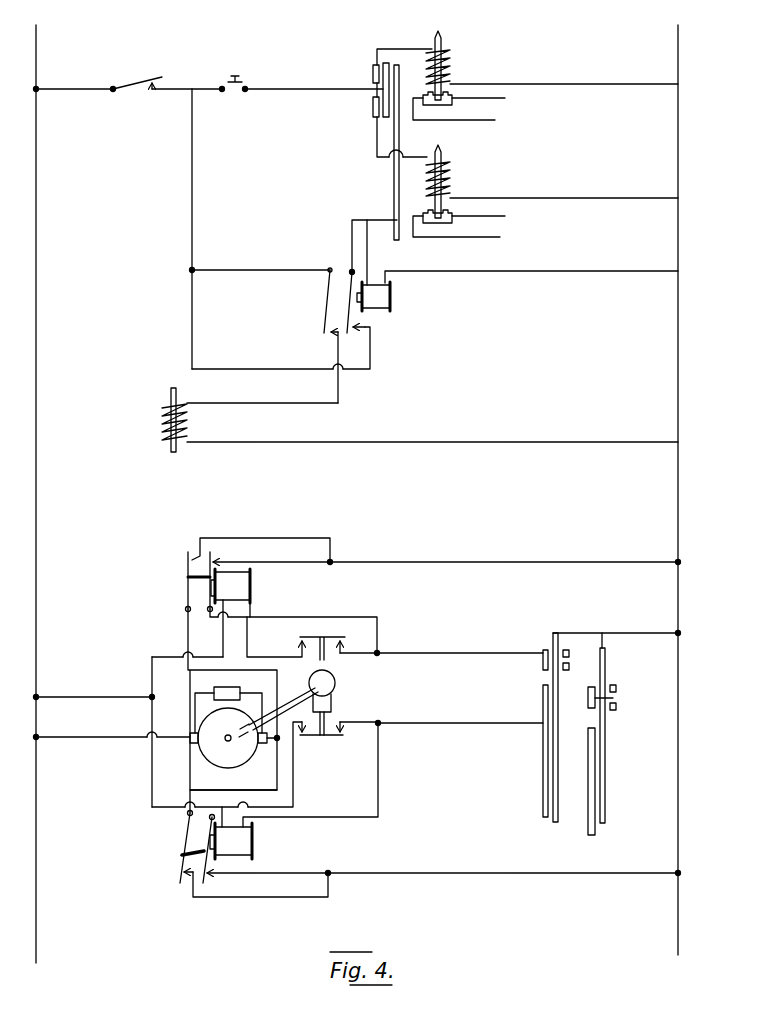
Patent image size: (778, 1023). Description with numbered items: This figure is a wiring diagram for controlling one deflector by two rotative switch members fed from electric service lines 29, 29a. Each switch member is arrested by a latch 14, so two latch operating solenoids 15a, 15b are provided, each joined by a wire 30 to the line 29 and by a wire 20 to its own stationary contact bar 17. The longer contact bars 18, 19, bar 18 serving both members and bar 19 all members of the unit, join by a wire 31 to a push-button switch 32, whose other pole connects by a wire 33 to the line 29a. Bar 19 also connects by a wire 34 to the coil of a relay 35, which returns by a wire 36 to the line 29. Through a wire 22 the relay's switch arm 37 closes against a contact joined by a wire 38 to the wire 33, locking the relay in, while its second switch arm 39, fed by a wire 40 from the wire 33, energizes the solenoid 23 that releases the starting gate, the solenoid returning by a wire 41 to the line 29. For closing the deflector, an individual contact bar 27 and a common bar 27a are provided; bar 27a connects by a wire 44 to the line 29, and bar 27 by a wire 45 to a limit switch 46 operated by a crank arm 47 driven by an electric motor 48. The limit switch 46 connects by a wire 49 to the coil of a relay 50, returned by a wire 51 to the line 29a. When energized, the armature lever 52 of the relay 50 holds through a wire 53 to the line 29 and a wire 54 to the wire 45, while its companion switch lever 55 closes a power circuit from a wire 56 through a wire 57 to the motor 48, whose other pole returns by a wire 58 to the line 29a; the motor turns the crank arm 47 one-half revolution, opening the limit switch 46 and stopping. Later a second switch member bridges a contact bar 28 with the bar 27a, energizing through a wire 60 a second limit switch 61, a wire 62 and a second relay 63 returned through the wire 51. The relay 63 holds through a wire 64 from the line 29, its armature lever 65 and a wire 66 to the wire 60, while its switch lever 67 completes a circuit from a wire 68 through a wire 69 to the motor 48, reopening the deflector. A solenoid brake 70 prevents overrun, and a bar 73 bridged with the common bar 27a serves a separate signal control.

The latch 14 is at (445, 37).
The latch operating solenoid 15a is at (456, 70).
The latch operating solenoid 15b is at (452, 181).
The stationary contact bar 17 is at (372, 70).
The stationary contact bar 18 is at (386, 62).
The stationary contact bar 19 is at (378, 168).
The wire 20 is at (377, 48).
The wire 22 is at (350, 232).
The solenoid 23 is at (160, 430).
The stationary contact bar 27 is at (544, 650).
The common contact bar 27a is at (561, 634).
The stationary contact bar 28 is at (545, 756).
The electric service line 29 is at (681, 520).
The electric service line 29a is at (40, 534).
The wire 30 is at (548, 84).
The wire 31 is at (279, 92).
The push-button switch 32 is at (236, 72).
The wire 33 is at (167, 84).
The wire 34 is at (369, 264).
The relay 35 is at (391, 298).
The wire 36 is at (546, 271).
The switch arm 37 is at (353, 317).
The wire 38 is at (371, 356).
The second switch arm 39 is at (322, 306).
The wire 40 is at (223, 270).
The wire 41 is at (476, 442).
The wire 44 is at (617, 633).
The wire 45 is at (416, 653).
The limit switch 46 is at (338, 638).
The crank arm 47 is at (333, 698).
The electric motor 48 is at (212, 752).
The wire 49 is at (256, 656).
The relay 50 is at (239, 590).
The wire 51 is at (150, 657).
The armature lever 52 is at (206, 593).
The wire 53 is at (431, 562).
The wire 54 is at (302, 617).
The switch lever 55 is at (186, 571).
The wire 56 is at (254, 538).
The wire 57 is at (191, 671).
The wire 58 is at (108, 738).
The wire 60 is at (432, 724).
The second limit switch 61 is at (326, 737).
The wire 62 is at (297, 801).
The second relay 63 is at (249, 843).
The wire 64 is at (376, 873).
The armature lever 65 is at (178, 838).
The wire 66 is at (380, 809).
The switch lever 67 is at (183, 852).
The wire 68 is at (276, 897).
The wire 69 is at (208, 790).
The solenoid brake 70 is at (226, 693).
The bar 73 is at (618, 690).